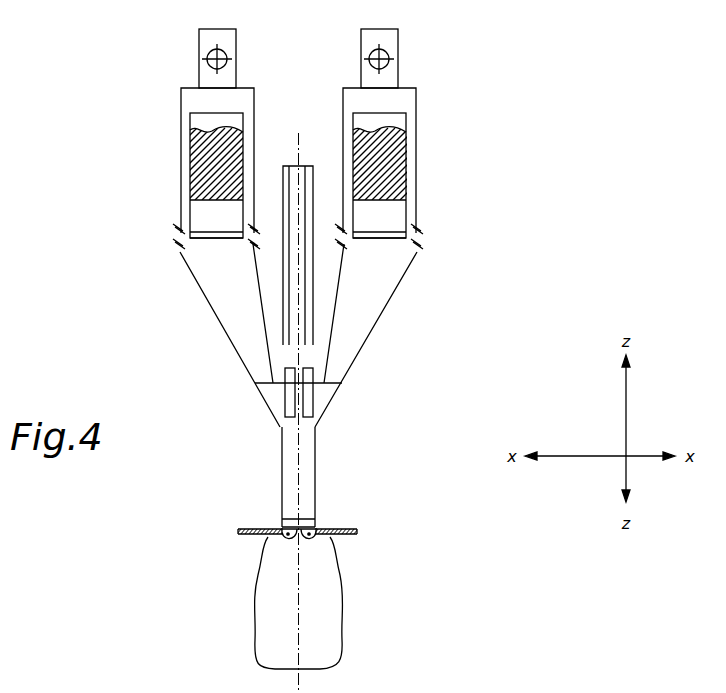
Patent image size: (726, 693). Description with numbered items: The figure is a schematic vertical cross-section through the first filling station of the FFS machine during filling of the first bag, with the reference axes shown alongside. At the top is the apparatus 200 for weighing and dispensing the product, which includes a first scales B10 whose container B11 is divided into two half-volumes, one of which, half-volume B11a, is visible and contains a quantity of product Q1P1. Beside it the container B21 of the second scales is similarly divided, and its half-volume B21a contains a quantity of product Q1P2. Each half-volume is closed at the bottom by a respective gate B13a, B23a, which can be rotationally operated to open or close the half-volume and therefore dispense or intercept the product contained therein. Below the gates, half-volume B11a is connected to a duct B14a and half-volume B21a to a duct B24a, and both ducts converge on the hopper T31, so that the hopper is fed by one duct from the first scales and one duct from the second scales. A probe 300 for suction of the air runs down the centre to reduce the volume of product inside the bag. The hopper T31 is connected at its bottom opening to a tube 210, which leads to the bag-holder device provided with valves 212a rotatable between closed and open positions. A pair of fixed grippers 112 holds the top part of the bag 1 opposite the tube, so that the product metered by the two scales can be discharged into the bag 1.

The bag 1 is at (330, 615).
The fixed grippers 112 is at (266, 528).
The apparatus for weighing and dispensing the product 200 is at (477, 70).
The tube 210 is at (293, 453).
The valves 212a is at (270, 540).
The probes for suction of the air 300 is at (305, 166).
The first scales B10 is at (145, 170).
The container of the first scales B11 is at (196, 112).
The half-volume of the first scales B11a is at (213, 124).
The gate B13a is at (217, 238).
The duct B14a is at (220, 295).
The container of the second scales B21 is at (401, 112).
The half-volume of the second scales B21a is at (384, 123).
The gate B23a is at (380, 238).
The duct B24a is at (377, 295).
The quantity of product Q1P1 is at (207, 146).
The quantity of product Q1P2 is at (390, 146).
The hopper T31 is at (325, 393).